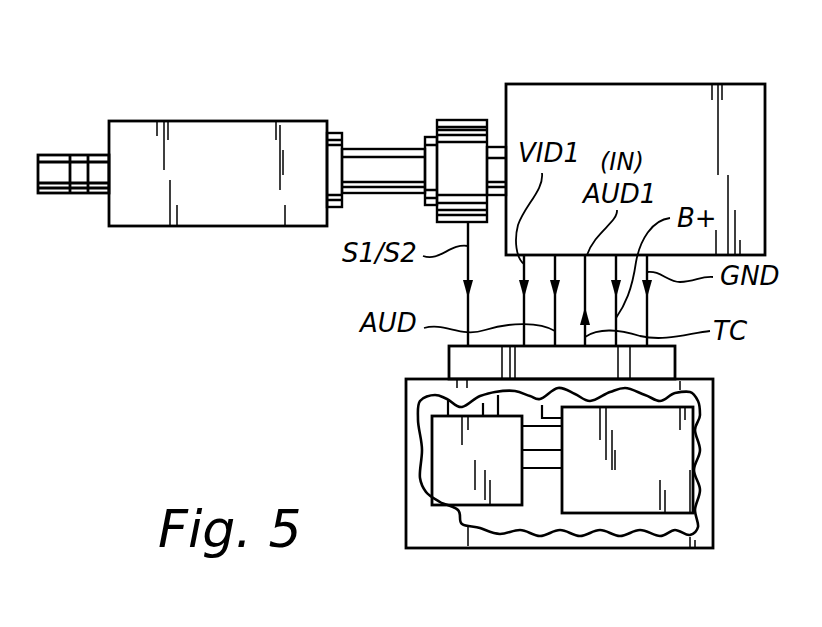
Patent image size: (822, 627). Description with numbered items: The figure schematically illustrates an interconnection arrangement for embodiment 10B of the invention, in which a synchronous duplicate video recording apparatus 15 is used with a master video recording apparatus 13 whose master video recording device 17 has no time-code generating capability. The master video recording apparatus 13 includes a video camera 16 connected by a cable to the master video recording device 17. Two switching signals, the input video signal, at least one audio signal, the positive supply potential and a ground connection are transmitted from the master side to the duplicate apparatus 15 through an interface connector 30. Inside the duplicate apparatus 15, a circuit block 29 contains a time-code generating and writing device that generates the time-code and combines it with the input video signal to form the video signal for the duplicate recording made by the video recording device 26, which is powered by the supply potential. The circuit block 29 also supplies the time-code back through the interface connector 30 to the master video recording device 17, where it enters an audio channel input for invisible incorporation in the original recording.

The embodiment 10B is at (238, 380).
The master video recording apparatus 13 is at (345, 80).
The synchronous duplicate video recording apparatus 15 is at (525, 496).
The video camera 16 is at (217, 248).
The master video recording device 17 is at (610, 68).
The video recording device 26 is at (636, 483).
The circuit block 29 is at (460, 483).
The interface connector 30 is at (680, 360).